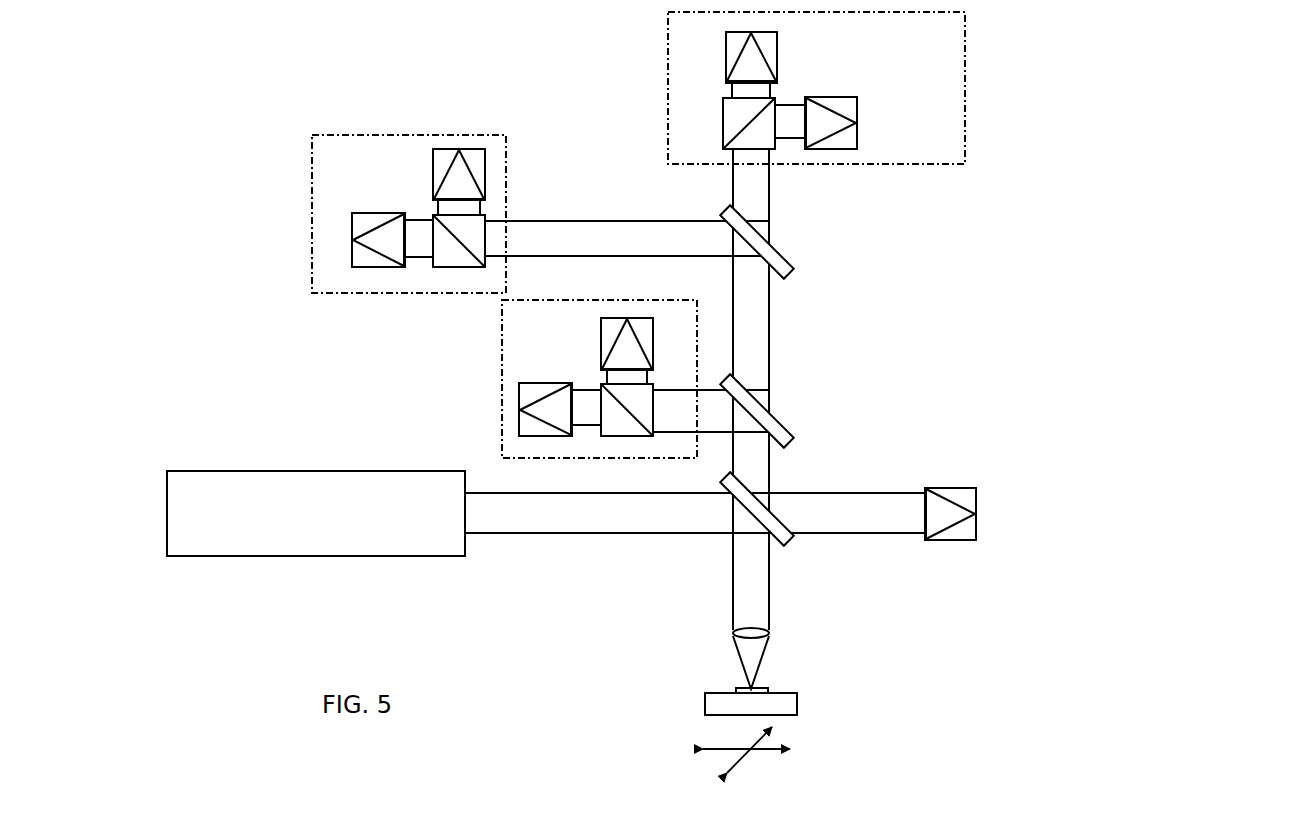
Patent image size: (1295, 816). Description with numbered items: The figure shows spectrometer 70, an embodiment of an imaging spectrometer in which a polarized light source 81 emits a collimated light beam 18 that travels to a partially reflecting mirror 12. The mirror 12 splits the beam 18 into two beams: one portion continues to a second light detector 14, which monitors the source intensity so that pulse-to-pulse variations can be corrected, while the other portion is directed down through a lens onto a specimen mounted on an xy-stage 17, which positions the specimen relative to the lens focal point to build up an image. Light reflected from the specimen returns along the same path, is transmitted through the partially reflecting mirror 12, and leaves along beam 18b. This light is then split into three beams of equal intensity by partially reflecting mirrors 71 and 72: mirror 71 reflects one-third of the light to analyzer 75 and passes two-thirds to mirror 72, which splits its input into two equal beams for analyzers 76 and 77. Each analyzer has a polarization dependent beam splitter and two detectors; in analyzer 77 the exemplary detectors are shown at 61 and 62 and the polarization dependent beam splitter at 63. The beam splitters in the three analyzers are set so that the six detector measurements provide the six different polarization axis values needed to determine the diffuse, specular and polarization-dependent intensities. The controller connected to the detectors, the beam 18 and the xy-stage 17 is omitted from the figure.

The spectrometer 70 is at (1173, 147).
The polarized light source 81 is at (227, 550).
The collimated light beam 18 is at (661, 533).
The beam 18b is at (760, 472).
The partially reflecting mirror 12 is at (784, 548).
The second light detector 14 is at (977, 500).
The xy-stage 17 is at (707, 698).
The partially reflecting mirror 71 is at (786, 426).
The partially reflecting mirror 72 is at (783, 262).
The analyzer 75 is at (500, 357).
The analyzer 76 is at (312, 180).
The analyzer 77 is at (856, 88).
The detector 61 is at (777, 47).
The detector 62 is at (857, 144).
The polarization dependent beam splitter 63 is at (726, 108).